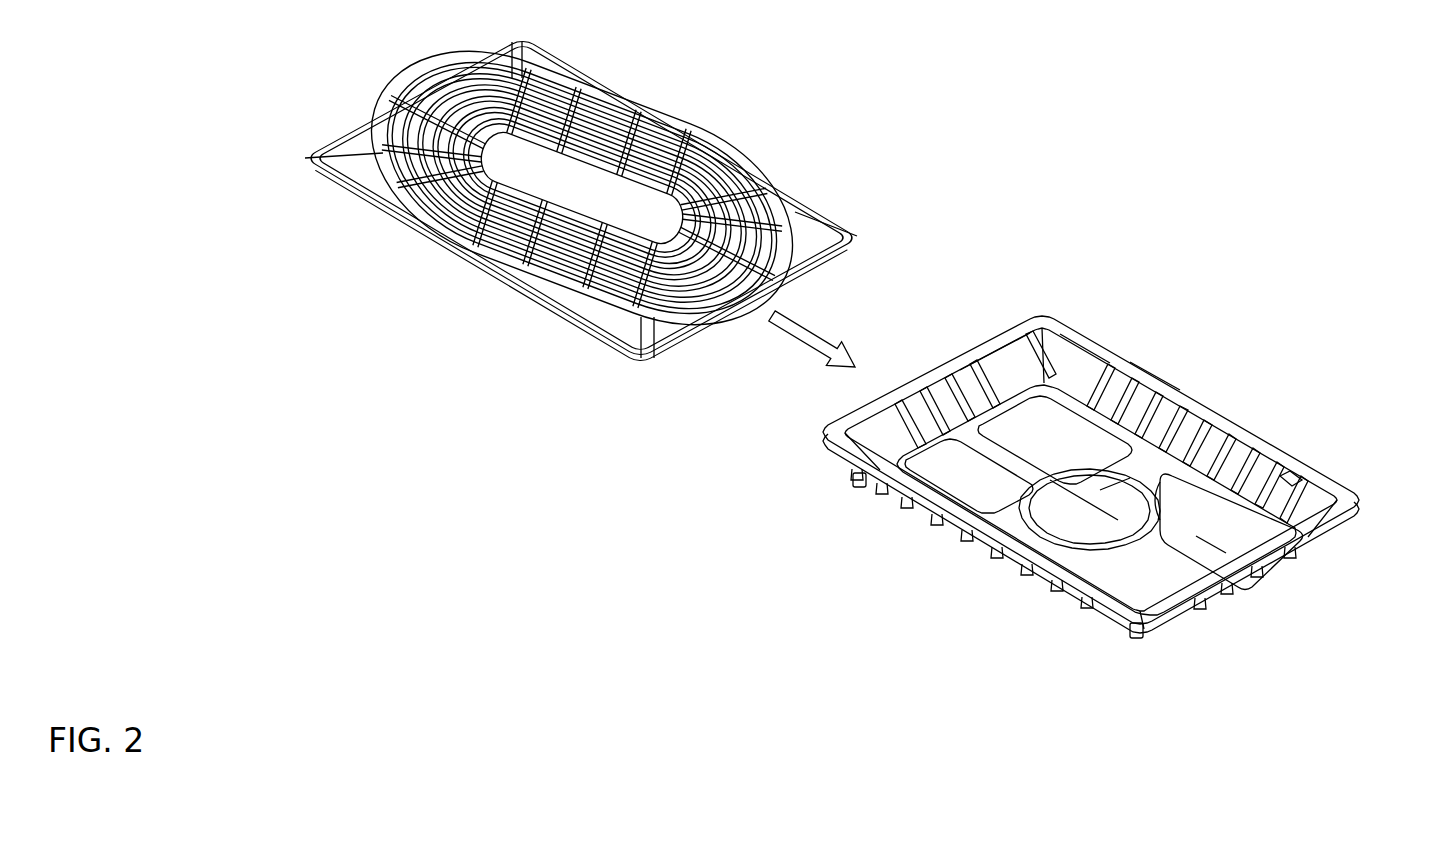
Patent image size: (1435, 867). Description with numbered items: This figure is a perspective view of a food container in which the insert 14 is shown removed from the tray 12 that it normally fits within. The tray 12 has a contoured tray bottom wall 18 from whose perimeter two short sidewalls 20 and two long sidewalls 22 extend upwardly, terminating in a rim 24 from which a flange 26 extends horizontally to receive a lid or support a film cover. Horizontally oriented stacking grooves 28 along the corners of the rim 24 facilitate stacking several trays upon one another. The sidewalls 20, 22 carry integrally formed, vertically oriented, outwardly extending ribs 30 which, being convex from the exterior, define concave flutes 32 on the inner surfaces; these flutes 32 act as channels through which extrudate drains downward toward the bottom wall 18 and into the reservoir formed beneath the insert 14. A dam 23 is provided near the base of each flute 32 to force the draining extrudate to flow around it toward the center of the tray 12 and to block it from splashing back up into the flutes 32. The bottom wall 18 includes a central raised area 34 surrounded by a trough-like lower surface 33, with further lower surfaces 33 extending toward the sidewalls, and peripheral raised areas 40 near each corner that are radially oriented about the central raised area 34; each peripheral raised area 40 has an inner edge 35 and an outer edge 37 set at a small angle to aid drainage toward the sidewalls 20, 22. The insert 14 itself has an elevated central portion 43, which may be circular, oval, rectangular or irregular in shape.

The tray 12 is at (1089, 419).
The insert 14 is at (758, 123).
The tray bottom wall 18 is at (993, 447).
The short sidewall 20 is at (990, 363).
The long sidewall 22 is at (1290, 487).
The dam 23 is at (1285, 493).
The rim 24 is at (1075, 332).
The flange 26 is at (1150, 368).
The stacking groove 28 is at (1036, 325).
The rib 30 is at (1017, 573).
The flute 32 is at (967, 377).
The lower surface 33 is at (1210, 543).
The raised area 34 is at (1050, 506).
The inner edge 35 is at (1113, 483).
The outer edge 37 is at (1013, 398).
The peripheral raised area 40 is at (1233, 557).
The central elevated portion 43 is at (800, 210).